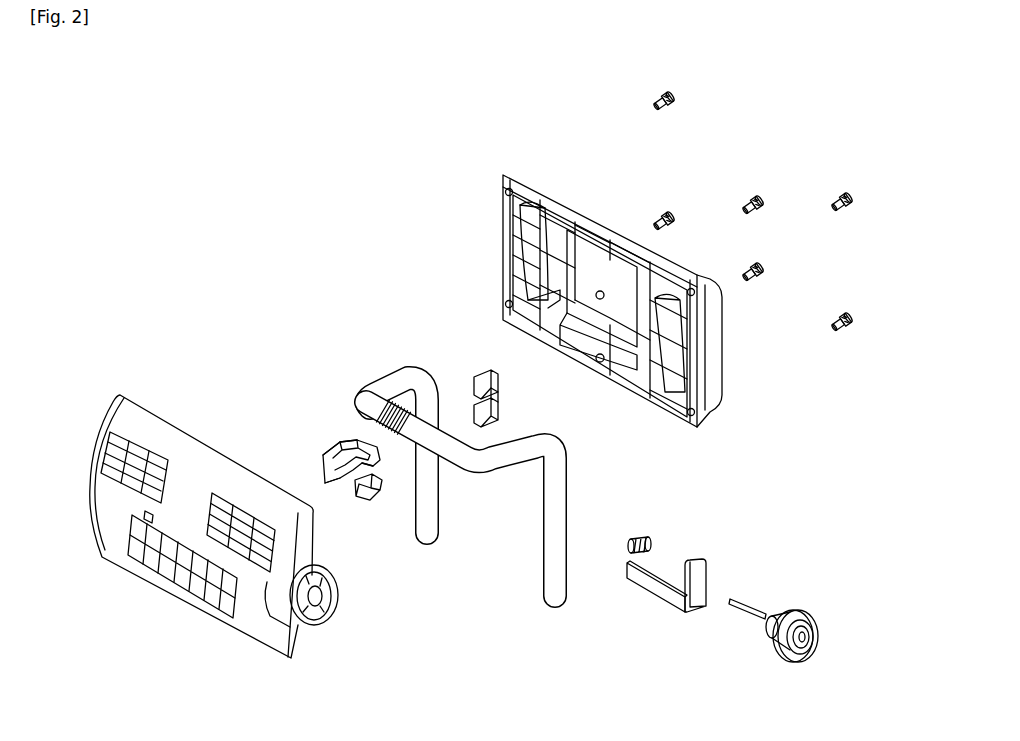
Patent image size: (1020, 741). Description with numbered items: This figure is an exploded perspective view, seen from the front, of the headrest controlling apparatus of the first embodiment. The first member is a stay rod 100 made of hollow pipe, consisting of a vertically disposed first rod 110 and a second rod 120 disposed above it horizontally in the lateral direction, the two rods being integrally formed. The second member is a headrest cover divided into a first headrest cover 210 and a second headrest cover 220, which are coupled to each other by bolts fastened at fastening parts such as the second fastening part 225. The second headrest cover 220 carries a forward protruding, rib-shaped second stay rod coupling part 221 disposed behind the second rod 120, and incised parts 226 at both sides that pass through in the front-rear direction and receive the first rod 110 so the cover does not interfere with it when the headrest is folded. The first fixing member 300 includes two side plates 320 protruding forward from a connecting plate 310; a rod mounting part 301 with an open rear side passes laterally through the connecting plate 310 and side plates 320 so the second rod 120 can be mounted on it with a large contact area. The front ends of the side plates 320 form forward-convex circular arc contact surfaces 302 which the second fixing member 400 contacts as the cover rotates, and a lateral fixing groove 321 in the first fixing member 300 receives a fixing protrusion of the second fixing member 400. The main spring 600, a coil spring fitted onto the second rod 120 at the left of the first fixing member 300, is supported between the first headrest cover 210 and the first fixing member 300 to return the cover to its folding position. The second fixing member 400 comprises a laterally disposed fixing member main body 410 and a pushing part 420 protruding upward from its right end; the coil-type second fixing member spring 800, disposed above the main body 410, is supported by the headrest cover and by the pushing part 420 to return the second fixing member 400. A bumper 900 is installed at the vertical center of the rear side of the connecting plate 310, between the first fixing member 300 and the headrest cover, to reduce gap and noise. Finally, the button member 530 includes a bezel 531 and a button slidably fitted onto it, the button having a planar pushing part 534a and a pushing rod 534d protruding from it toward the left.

The stay rod 100 is at (440, 447).
The first rod 110 is at (549, 560).
The second rod 120 is at (450, 450).
The first headrest cover 210 is at (107, 383).
The second headrest cover 220 is at (644, 245).
The second stay rod coupling part 221 is at (633, 357).
The second fastening part 225 is at (693, 303).
The incised parts 226 is at (535, 300).
The first fixing member 300 is at (327, 448).
The rod mounting part 301 is at (378, 478).
The contact surface 302 is at (323, 455).
The connecting plate 310 is at (360, 448).
The side plates 320 is at (363, 500).
The fixing groove 321 is at (324, 472).
The second fixing member 400 is at (693, 566).
The fixing member main body 410 is at (660, 595).
The pushing part 420 is at (700, 580).
The button member 530 is at (806, 628).
The bezel 531 is at (770, 632).
The pushing part 534a is at (805, 650).
The pushing rod 534d is at (745, 600).
The main spring 600 is at (388, 432).
The second fixing member spring 800 is at (640, 537).
The bumper 900 is at (485, 372).